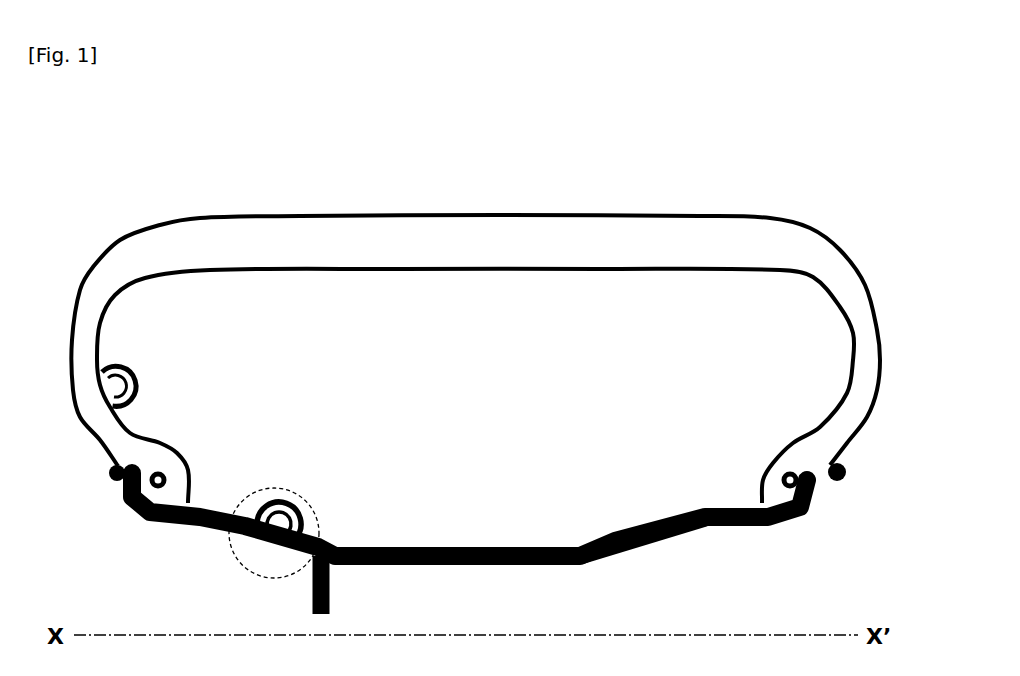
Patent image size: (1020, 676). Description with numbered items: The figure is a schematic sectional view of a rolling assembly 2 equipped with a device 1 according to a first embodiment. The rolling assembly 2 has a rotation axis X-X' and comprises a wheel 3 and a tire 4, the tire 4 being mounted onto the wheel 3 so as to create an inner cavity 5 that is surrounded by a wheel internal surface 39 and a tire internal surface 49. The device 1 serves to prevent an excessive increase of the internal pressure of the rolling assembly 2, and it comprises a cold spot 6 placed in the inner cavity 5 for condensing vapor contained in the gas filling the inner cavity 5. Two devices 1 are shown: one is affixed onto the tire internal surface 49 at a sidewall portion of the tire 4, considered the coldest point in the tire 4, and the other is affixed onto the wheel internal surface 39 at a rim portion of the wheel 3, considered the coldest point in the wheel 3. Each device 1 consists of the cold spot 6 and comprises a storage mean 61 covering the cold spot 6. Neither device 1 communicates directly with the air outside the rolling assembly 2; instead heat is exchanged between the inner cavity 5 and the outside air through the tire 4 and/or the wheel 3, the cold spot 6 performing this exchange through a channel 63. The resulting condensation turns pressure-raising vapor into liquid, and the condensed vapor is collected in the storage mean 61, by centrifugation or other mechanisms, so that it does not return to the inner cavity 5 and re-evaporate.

The device 1 is at (166, 359).
The rolling assembly 2 is at (475, 293).
The wheel 3 is at (477, 535).
The tire 4 is at (223, 245).
The inner cavity 5 is at (484, 408).
The cold spot 6 is at (147, 353).
The wheel internal surface 39 is at (612, 533).
The tire internal surface 49 is at (535, 271).
The storage mean 61 is at (120, 364).
The channel 63 is at (302, 540).